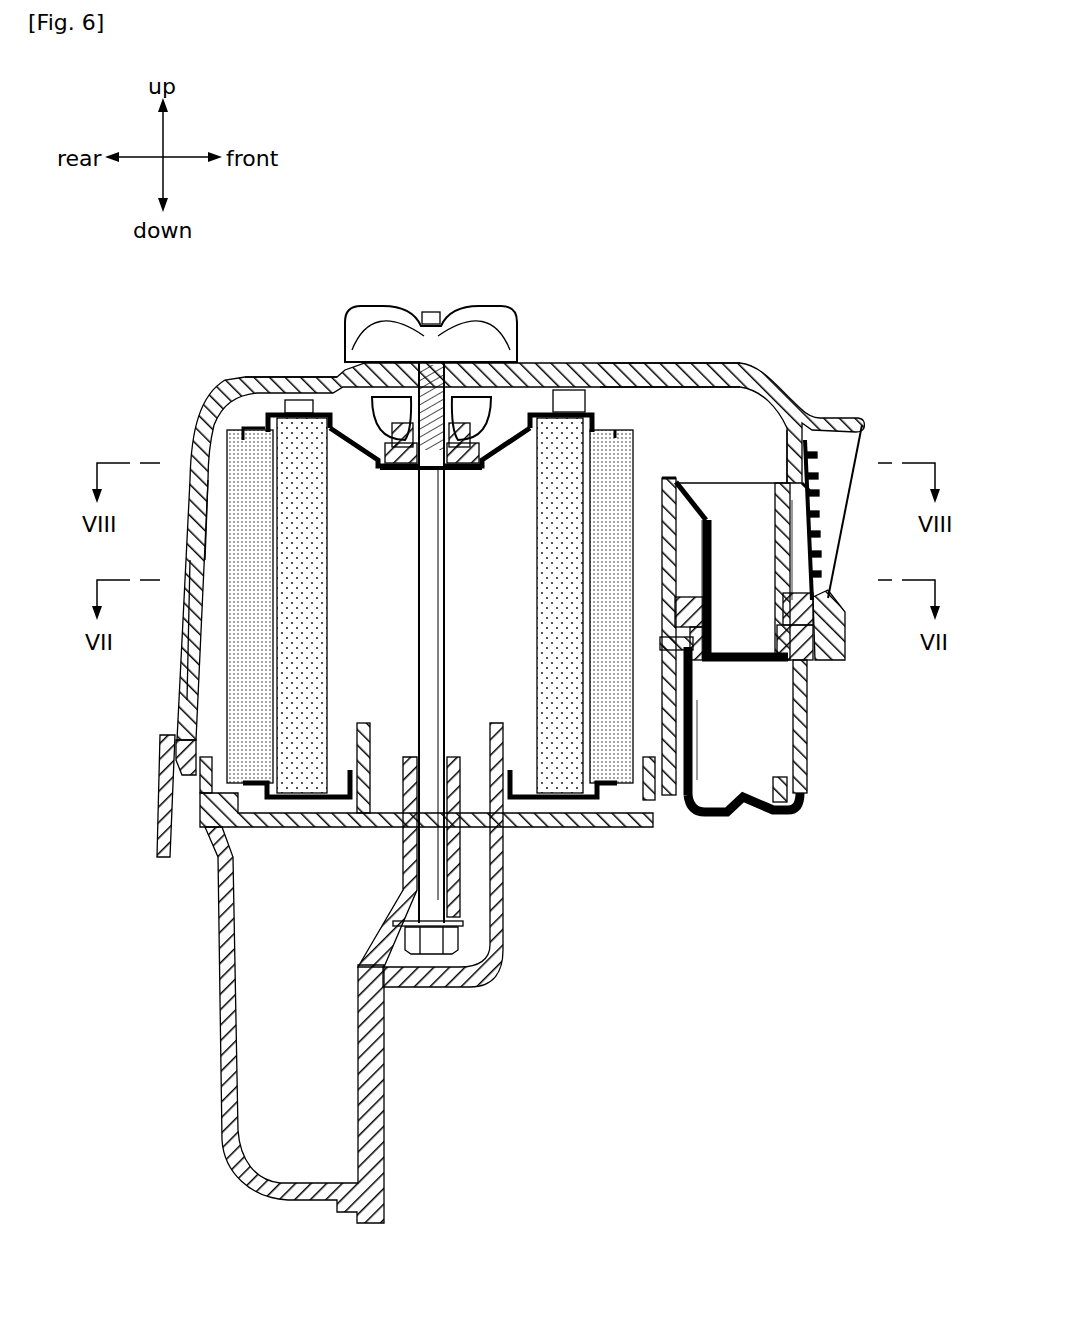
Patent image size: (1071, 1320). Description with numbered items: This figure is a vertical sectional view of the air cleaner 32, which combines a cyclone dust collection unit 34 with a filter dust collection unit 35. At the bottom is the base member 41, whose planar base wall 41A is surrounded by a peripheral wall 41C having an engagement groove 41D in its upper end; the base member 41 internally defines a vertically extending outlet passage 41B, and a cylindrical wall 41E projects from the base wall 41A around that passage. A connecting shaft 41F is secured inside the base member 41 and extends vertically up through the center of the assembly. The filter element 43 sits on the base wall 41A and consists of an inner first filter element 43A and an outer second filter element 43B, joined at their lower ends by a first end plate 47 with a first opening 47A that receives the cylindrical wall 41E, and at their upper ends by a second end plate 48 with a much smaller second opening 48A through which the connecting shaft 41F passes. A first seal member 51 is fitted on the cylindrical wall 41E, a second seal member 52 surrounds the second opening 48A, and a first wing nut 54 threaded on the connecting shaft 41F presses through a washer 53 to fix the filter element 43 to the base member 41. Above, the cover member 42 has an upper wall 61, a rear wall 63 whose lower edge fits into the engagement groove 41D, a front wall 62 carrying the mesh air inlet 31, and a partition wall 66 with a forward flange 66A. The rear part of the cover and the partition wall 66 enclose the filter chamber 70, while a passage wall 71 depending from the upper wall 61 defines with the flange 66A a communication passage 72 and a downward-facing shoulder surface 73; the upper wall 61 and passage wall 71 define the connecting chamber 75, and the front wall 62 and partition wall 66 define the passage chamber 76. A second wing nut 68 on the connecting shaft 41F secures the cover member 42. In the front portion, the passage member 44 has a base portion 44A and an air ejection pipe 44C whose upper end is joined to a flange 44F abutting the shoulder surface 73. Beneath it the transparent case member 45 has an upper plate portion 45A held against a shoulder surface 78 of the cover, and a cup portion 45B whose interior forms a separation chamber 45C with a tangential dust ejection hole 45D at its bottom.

The air inlet 31 is at (820, 467).
The air cleaner 32 is at (222, 308).
The cyclone dust collection unit 34 is at (766, 845).
The filter dust collection unit 35 is at (213, 477).
The base member 41 is at (354, 945).
The base wall 41A is at (258, 797).
The outlet passage 41B is at (228, 985).
The peripheral wall 41C is at (172, 790).
The engagement groove 41D is at (178, 768).
The cylindrical wall 41E is at (358, 725).
The connecting shaft 41F is at (418, 590).
The cover member 42 is at (583, 362).
The filter element 43 is at (430, 605).
The first filter element 43A is at (548, 672).
The second filter element 43B is at (600, 716).
The passage member 44 is at (796, 588).
The base portion 44A is at (820, 626).
The air ejection pipe 44C is at (768, 662).
The flange 44F is at (800, 522).
The case member 45 is at (753, 777).
The upper plate portion 45A is at (808, 662).
The cup portion 45B is at (732, 818).
The separation chamber 45C is at (731, 747).
The dust ejection hole 45D is at (782, 805).
The first end plate 47 is at (306, 803).
The first opening 47A is at (366, 800).
The second end plate 48 is at (258, 432).
The second opening 48A is at (418, 470).
The first seal member 51 is at (560, 828).
The second seal member 52 is at (405, 466).
The washer 53 is at (505, 432).
The first wing nut 54 is at (392, 383).
The upper wall 61 is at (712, 378).
The front wall 62 is at (835, 640).
The rear wall 63 is at (185, 692).
The partition wall 66 is at (663, 560).
The flange 66A is at (672, 470).
The second wing nut 68 is at (408, 305).
The filter chamber 70 is at (670, 405).
The passage wall 71 is at (787, 470).
The communication passage 72 is at (678, 482).
The shoulder surface 73 is at (800, 482).
The connecting chamber 75 is at (731, 453).
The passage chamber 76 is at (800, 567).
The shoulder surface 78 is at (822, 662).